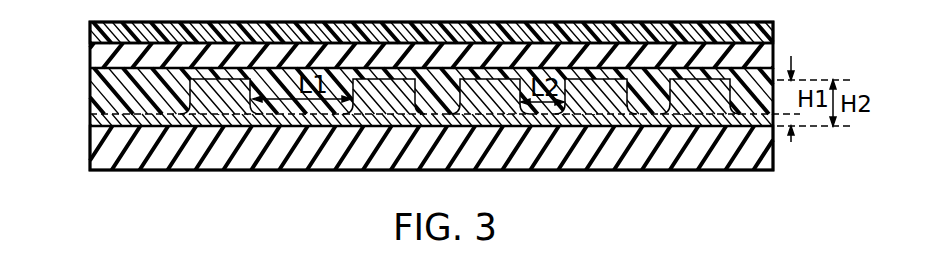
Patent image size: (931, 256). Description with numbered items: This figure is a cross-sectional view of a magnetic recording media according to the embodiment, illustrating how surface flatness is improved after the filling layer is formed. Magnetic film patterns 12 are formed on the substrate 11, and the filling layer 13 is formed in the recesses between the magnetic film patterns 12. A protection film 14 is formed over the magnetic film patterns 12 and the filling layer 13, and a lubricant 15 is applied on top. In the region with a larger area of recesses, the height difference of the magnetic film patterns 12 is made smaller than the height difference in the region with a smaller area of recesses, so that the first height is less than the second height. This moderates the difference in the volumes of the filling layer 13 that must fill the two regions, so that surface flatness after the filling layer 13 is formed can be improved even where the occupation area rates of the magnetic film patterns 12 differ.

The substrate 11 is at (97, 150).
The magnetic film patterns 12 is at (97, 117).
The filling layer 13 is at (97, 92).
The protection film 14 is at (97, 53).
The lubricant 15 is at (97, 31).